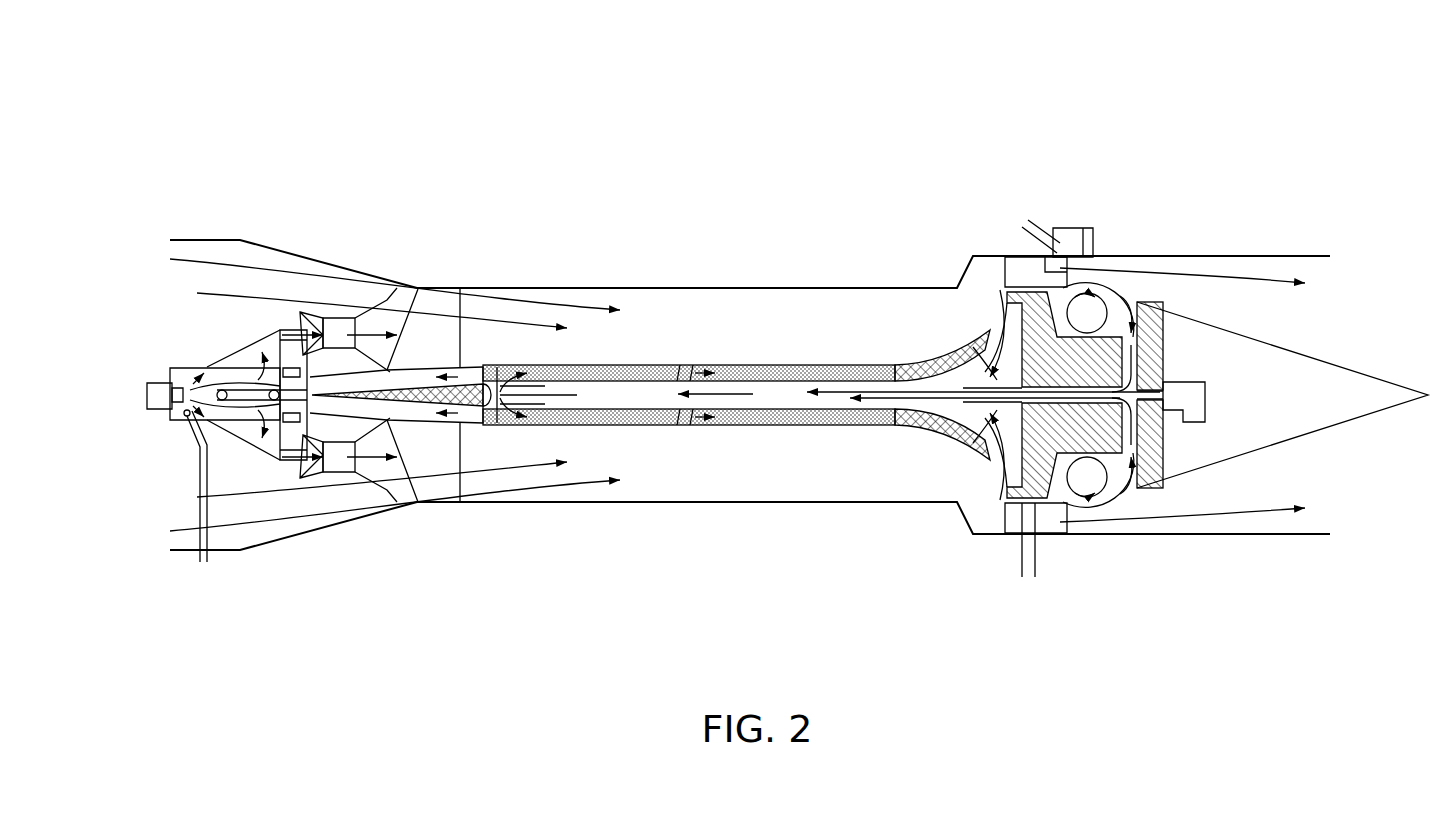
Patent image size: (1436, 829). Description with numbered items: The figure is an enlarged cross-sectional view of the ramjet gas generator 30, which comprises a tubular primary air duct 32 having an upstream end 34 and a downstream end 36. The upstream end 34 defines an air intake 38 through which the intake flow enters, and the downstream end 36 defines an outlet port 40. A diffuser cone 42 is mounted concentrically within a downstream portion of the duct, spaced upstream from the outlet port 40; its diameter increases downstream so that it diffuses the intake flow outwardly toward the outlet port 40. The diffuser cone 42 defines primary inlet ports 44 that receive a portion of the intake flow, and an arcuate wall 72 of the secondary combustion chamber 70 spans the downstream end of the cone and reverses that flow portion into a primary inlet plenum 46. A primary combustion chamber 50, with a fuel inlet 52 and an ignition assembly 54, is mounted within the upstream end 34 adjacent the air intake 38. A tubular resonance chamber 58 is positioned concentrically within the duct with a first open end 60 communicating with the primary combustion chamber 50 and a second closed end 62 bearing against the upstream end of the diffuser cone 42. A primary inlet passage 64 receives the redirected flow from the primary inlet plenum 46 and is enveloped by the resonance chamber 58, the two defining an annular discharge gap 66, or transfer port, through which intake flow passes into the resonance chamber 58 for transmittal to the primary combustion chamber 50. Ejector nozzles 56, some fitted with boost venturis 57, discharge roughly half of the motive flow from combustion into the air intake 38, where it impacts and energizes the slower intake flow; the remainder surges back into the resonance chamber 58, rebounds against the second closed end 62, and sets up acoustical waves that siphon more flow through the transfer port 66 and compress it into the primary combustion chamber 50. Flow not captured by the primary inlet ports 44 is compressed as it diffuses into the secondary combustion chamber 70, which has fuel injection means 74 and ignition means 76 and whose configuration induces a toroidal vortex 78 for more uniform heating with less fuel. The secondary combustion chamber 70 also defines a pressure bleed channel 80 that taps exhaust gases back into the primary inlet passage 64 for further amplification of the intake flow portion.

The ramjet gas generator 30 is at (658, 125).
The primary air duct 32 is at (772, 287).
The upstream end 34 is at (262, 228).
The downstream end 36 is at (1253, 235).
The air intake 38 is at (390, 298).
The outlet port 40 is at (1317, 532).
The diffuser cone 42 is at (917, 357).
The primary inlet ports 44 is at (993, 313).
The primary inlet plenum 46 is at (1000, 368).
The primary combustion chamber 50 is at (215, 375).
The fuel inlet 52 is at (440, 300).
The ignition assembly 54 is at (158, 410).
The ejector nozzles 56 is at (335, 313).
The boost venturis 57 is at (348, 325).
The resonance chamber 58 is at (658, 363).
The first open end 60 is at (337, 405).
The second closed end 62 is at (988, 333).
The primary inlet passage 64 is at (770, 397).
The annular discharge gap 66 is at (488, 413).
The secondary combustion chamber 70 is at (1132, 503).
The arcuate wall 72 is at (1003, 305).
The fuel injection means 74 is at (1040, 220).
The ignition means 76 is at (1073, 228).
The toroidal vortex 78 is at (1087, 313).
The pressure bleed channel 80 is at (1135, 348).